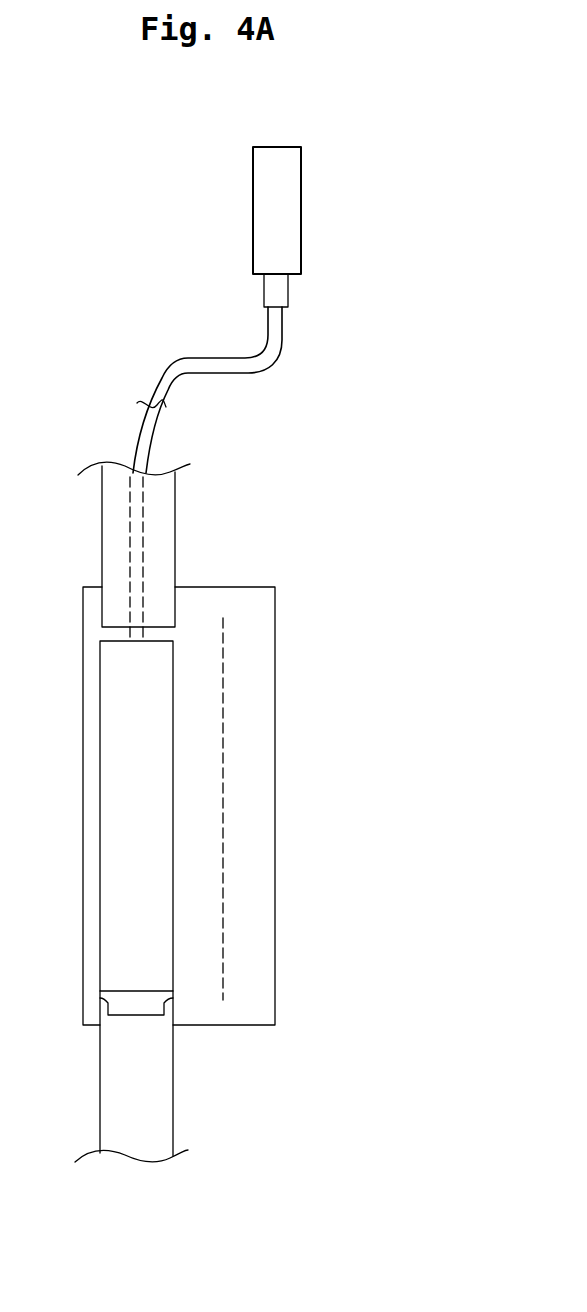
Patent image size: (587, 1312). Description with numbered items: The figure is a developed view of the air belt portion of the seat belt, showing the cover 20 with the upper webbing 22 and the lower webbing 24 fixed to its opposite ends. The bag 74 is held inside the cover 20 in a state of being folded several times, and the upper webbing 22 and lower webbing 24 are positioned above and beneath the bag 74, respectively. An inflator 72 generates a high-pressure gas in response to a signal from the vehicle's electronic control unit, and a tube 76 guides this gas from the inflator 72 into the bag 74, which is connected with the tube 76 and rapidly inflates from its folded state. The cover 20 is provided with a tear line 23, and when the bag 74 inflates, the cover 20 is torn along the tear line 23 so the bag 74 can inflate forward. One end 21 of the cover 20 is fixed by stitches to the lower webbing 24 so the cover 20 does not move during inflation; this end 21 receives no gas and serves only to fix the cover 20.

The inflator 72 is at (302, 207).
The tube 76 is at (258, 355).
The upper webbing 22 is at (175, 503).
The bag 74 is at (158, 723).
The cover 20 is at (275, 655).
The tear line 23 is at (223, 764).
The end of the cover 21 is at (130, 1010).
The lower webbing 24 is at (146, 1096).